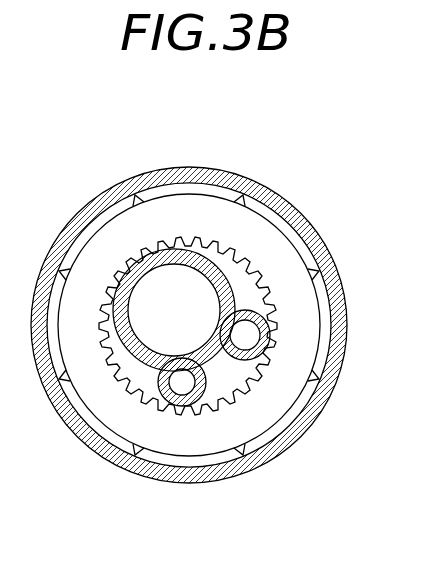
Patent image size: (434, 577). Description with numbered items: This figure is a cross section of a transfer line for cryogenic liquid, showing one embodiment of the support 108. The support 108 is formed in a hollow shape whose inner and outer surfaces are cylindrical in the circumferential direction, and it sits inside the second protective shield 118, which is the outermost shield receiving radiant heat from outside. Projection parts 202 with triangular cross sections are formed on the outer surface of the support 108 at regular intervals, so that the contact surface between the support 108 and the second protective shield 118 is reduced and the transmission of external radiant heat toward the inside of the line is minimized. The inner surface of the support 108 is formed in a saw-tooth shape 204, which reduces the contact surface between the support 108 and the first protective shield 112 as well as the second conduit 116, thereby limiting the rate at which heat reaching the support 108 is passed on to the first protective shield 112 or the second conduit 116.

The support 108 is at (282, 242).
The first protective shield 112 is at (113, 365).
The second conduit 116 is at (173, 404).
The second protective shield 118 is at (272, 195).
The projection parts 202 is at (240, 199).
The saw-tooth shape 204 is at (269, 303).